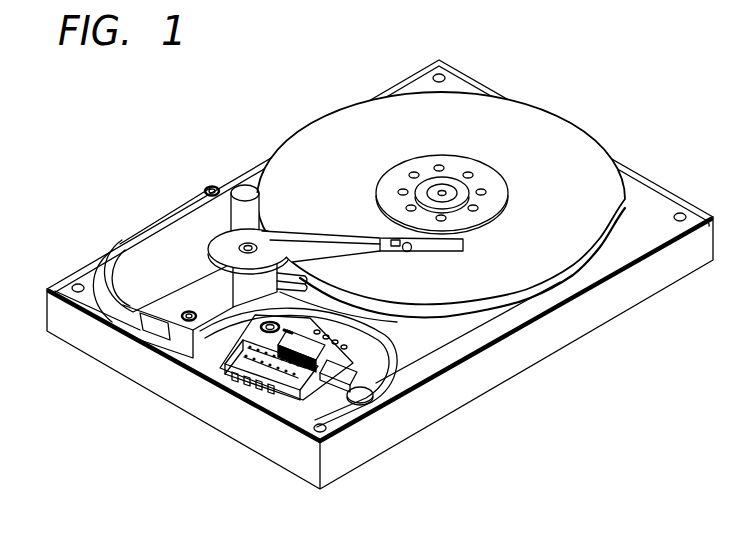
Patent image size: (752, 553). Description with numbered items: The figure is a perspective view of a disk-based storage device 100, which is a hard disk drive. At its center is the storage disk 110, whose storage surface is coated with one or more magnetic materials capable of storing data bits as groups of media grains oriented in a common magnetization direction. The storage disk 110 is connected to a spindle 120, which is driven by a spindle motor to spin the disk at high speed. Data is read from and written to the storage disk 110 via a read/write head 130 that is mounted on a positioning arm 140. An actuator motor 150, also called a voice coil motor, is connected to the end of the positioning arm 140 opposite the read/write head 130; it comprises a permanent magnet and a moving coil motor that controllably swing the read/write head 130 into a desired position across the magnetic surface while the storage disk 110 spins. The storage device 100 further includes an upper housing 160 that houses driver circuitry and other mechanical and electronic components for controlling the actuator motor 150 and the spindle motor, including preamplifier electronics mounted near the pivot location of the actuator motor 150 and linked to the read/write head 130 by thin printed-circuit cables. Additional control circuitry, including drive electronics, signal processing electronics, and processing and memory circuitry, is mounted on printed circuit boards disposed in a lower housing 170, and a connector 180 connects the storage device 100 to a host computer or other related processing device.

The storage device 100 is at (166, 104).
The storage disk 110 is at (553, 128).
The spindle 120 is at (462, 187).
The read/write head 130 is at (431, 243).
The positioning arm 140 is at (312, 237).
The actuator motor 150 is at (223, 253).
The upper housing 160 is at (147, 233).
The lower housing 170 is at (386, 433).
The connector 180 is at (263, 373).